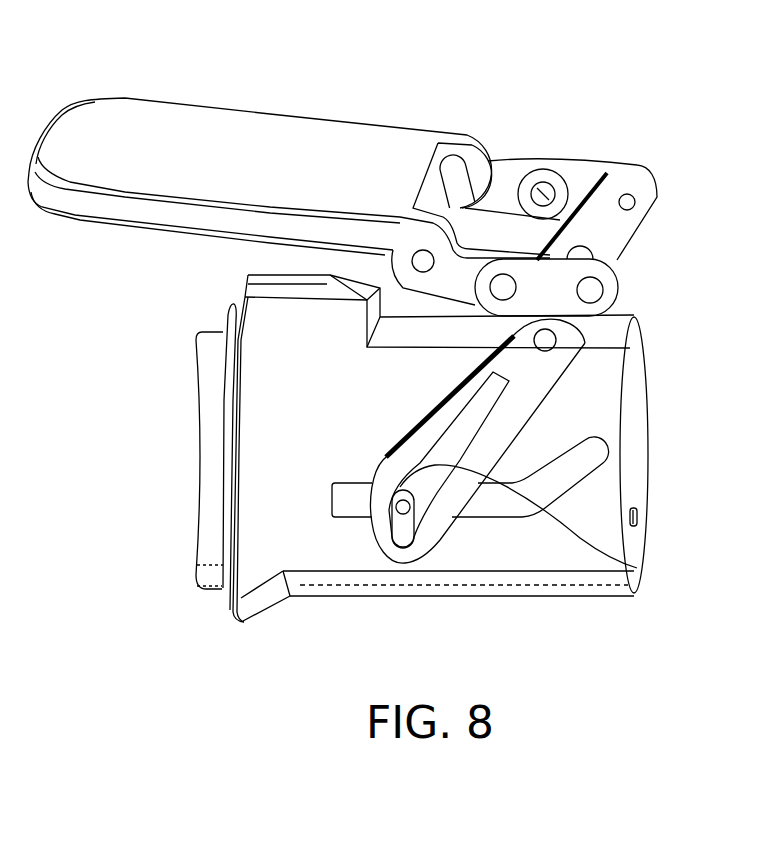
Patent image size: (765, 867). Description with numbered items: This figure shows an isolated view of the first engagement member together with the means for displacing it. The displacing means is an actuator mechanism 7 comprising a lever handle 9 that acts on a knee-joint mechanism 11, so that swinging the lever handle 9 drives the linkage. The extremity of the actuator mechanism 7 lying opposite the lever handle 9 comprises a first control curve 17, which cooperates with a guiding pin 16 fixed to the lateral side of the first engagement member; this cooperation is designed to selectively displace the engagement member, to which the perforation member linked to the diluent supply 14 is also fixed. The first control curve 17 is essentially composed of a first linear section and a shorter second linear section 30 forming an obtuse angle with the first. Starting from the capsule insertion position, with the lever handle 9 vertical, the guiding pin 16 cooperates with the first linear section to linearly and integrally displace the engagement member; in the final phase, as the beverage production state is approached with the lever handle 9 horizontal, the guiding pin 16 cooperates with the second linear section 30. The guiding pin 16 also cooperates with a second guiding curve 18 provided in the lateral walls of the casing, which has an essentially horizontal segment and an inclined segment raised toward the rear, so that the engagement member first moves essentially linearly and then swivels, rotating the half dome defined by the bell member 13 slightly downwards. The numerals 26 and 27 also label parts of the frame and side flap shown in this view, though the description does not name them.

The actuator mechanism 7 is at (342, 164).
The lever handle 9 is at (228, 110).
The knee-joint mechanism 11 is at (600, 147).
The bell member 13 is at (272, 608).
The diluent supply 14 is at (639, 518).
The guiding pin 16 is at (477, 482).
The first control curve 17 is at (640, 568).
The second guiding curve 18 is at (618, 469).
The frame rail 26 is at (495, 390).
The side flap 27 is at (250, 507).
The second linear section 30 is at (400, 555).